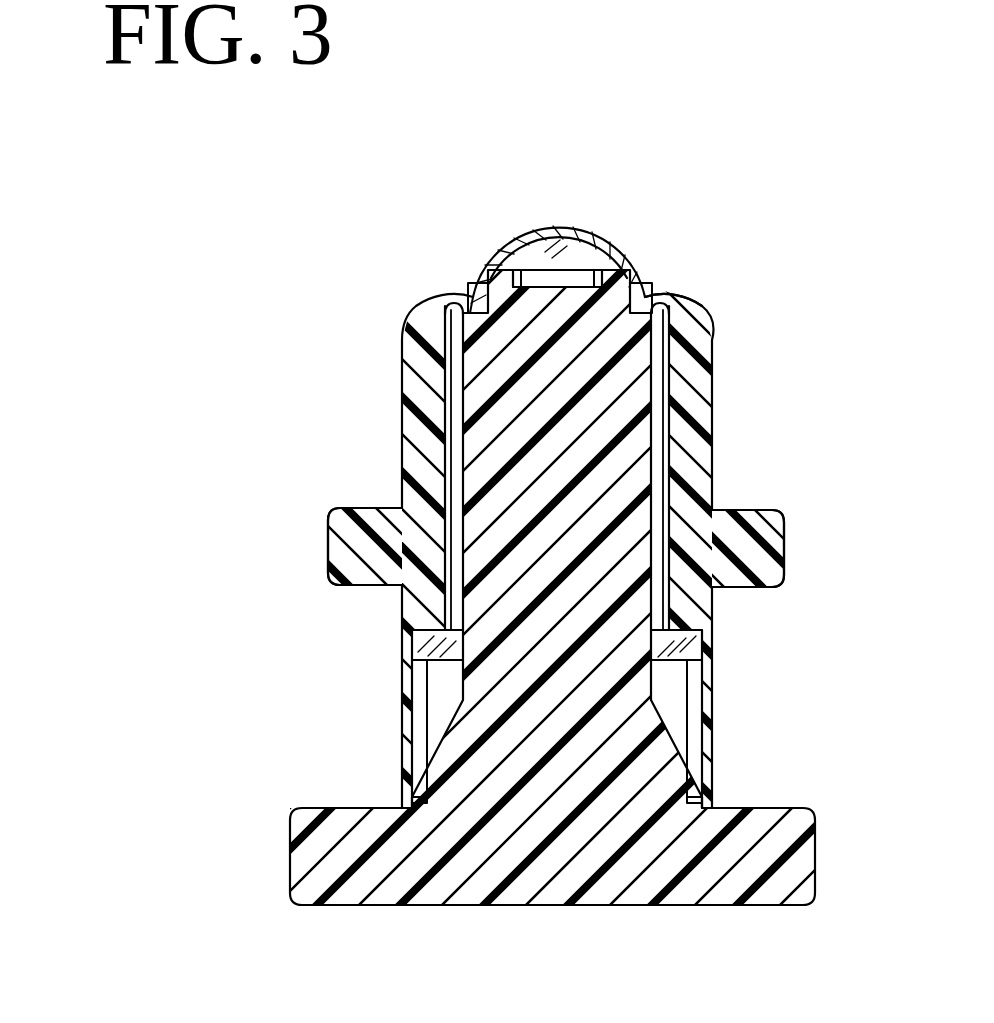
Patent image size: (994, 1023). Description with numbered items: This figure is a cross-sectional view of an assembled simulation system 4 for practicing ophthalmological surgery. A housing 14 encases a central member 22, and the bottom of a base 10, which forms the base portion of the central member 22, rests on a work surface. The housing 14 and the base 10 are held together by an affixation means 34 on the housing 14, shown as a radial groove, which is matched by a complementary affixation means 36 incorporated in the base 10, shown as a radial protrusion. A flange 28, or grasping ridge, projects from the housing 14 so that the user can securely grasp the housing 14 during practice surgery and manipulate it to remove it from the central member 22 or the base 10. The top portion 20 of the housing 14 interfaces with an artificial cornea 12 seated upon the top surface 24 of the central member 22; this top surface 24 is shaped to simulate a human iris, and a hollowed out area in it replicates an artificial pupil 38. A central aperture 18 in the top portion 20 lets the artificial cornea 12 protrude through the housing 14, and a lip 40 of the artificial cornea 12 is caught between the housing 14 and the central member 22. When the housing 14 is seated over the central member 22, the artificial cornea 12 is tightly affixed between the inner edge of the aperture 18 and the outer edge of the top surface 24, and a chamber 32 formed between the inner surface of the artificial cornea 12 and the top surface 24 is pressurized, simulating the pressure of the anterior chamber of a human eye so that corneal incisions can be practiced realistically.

The simulation system 4 is at (188, 608).
The base 10 is at (503, 820).
The artificial cornea 12 is at (568, 238).
The housing 14 is at (703, 397).
The central aperture 18 is at (468, 276).
The top portion 20 is at (675, 295).
The central member 22 is at (637, 477).
The top surface 24 is at (476, 262).
The flange 28 is at (766, 545).
The chamber 32 is at (593, 260).
The affixation means 34 is at (712, 803).
The complementary affixation means 36 is at (412, 797).
The artificial pupil 38 is at (543, 277).
The lip 40 is at (645, 285).